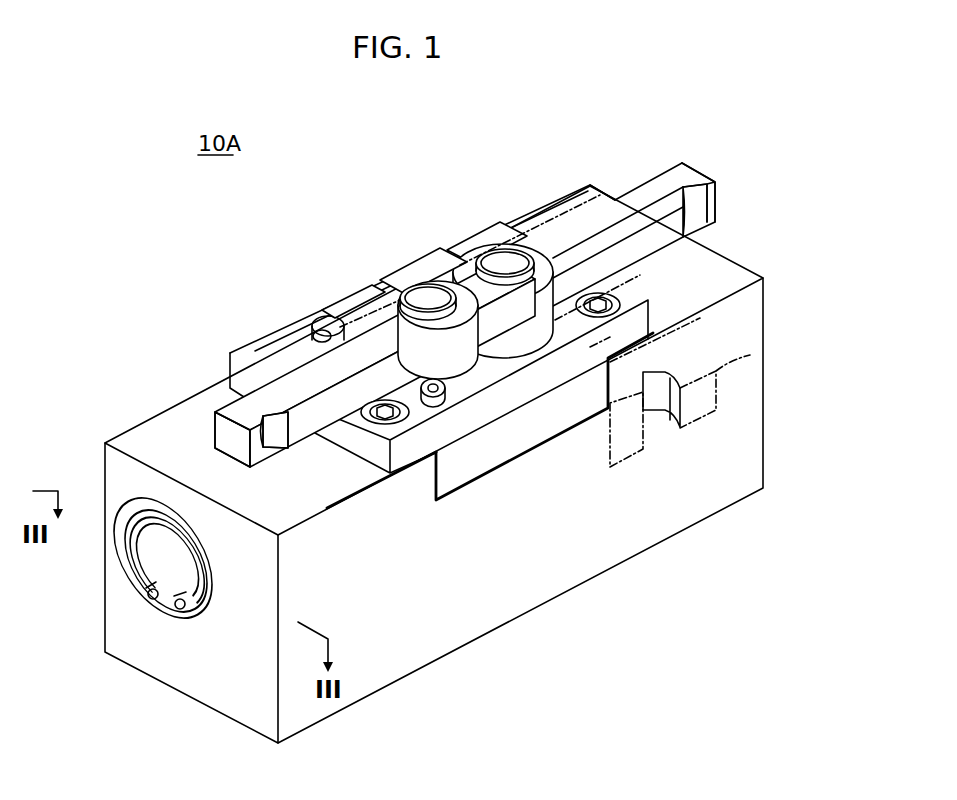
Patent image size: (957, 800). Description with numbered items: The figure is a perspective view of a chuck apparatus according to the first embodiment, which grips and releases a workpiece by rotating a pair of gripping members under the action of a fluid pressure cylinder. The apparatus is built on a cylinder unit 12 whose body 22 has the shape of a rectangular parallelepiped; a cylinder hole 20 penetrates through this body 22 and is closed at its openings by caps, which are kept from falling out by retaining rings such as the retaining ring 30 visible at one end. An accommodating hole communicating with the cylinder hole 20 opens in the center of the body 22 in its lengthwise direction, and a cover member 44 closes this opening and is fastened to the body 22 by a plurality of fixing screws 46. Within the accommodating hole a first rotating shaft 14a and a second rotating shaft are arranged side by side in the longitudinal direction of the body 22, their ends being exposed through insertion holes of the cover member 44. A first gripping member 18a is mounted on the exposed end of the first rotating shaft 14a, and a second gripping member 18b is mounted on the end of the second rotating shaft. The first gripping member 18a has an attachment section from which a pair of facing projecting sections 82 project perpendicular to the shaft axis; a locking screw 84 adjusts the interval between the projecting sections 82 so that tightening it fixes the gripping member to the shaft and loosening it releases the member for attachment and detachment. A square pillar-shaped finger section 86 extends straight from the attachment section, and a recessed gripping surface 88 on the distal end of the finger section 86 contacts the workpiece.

The cylinder unit 12 is at (560, 184).
The first rotating shaft 14a is at (470, 237).
The first gripping member 18a is at (684, 161).
The second gripping member 18b is at (222, 401).
The cylinder hole 20 is at (126, 556).
The body 22 is at (434, 464).
The retaining ring 30 is at (147, 591).
The cover member 44 is at (490, 457).
The fixing screw 46 is at (606, 289).
The projecting section 82 is at (435, 260).
The locking screw 84 is at (510, 230).
The finger section 86 is at (223, 443).
The gripping surface 88 is at (278, 433).